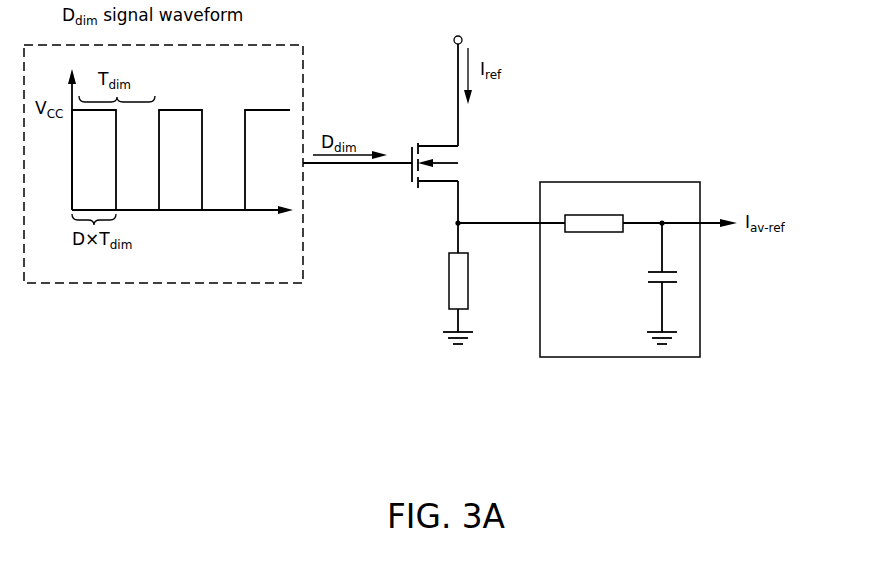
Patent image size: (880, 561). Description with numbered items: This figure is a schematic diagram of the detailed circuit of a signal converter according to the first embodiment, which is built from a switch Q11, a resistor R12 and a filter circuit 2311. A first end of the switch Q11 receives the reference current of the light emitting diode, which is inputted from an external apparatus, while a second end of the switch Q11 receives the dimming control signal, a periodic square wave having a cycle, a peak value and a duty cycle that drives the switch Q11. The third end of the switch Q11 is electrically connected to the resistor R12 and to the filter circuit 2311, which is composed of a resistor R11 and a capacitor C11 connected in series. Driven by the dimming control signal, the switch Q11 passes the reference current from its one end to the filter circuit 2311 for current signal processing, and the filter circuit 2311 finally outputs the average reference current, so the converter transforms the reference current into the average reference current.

The switch Q11 is at (457, 183).
The resistor R11 is at (594, 211).
The resistor R12 is at (475, 283).
The capacitor C11 is at (641, 283).
The filter circuit 2311 is at (681, 182).